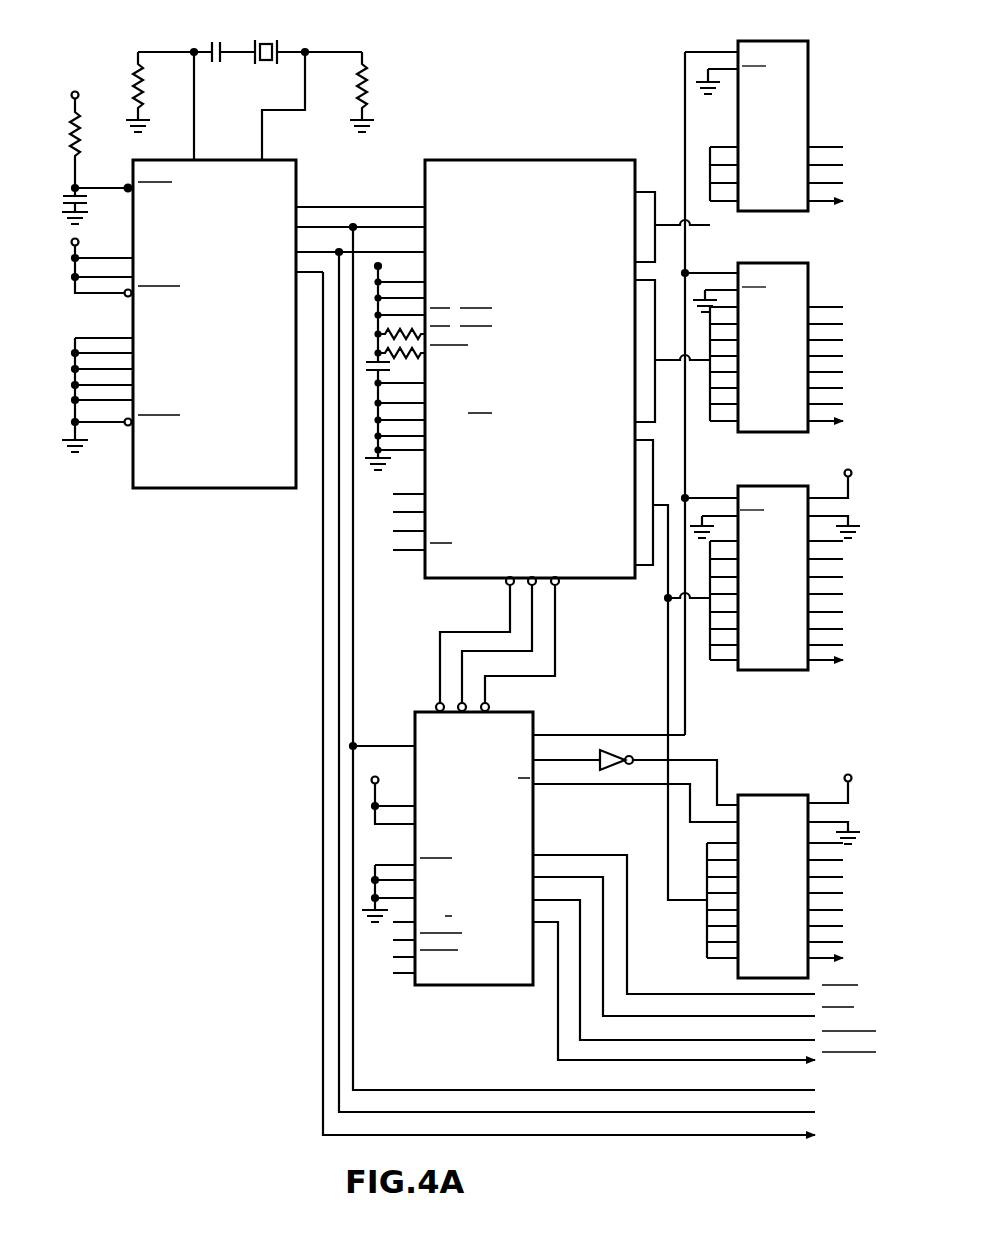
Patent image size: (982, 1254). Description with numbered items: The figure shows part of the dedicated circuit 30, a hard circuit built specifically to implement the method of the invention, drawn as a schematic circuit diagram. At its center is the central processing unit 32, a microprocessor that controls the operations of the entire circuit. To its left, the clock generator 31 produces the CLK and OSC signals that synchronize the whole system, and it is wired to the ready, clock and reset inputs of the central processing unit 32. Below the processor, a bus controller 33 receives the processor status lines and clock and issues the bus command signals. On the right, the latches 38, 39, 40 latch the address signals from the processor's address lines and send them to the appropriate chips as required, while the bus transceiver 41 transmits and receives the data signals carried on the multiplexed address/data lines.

The dedicated circuit 30 is at (252, 1000).
The clock generator 31 is at (162, 490).
The central processing unit 32 is at (530, 160).
The bus controller 33 is at (535, 722).
The latch 38 is at (798, 41).
The latch 39 is at (800, 263).
The latch 40 is at (776, 486).
The bus transceiver 41 is at (758, 795).